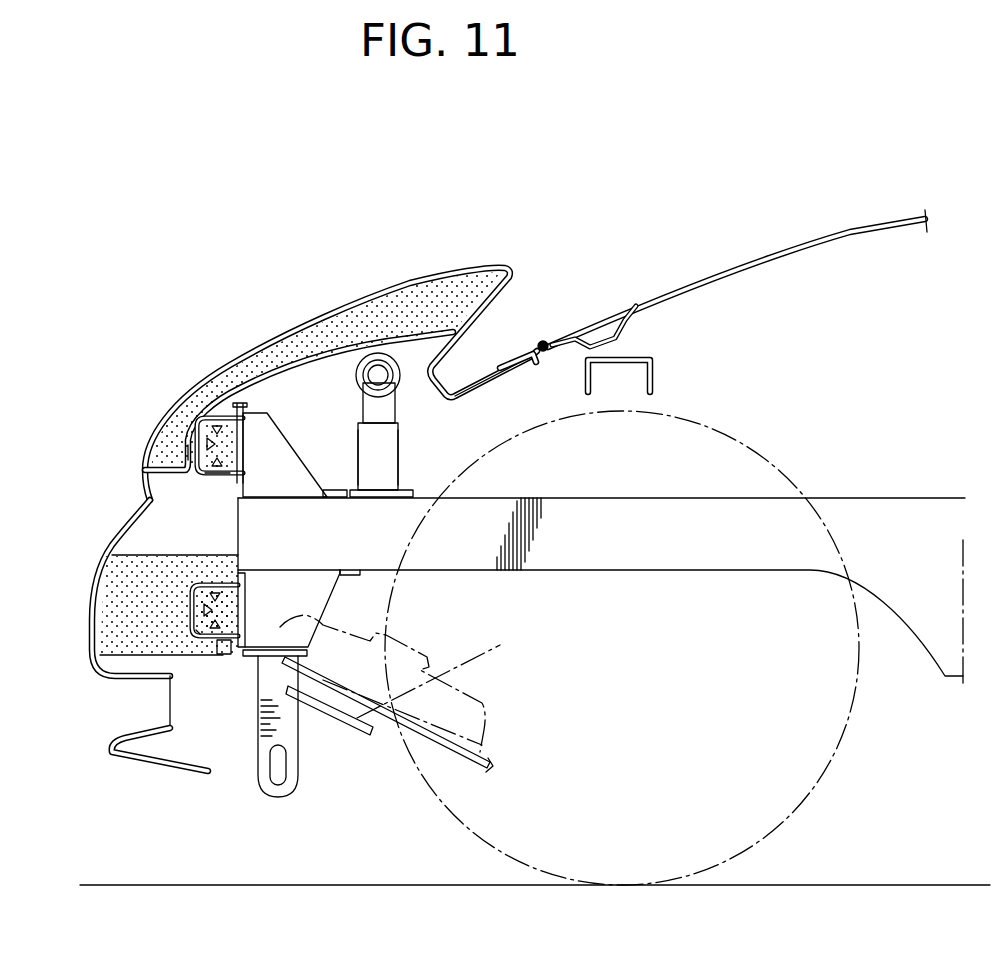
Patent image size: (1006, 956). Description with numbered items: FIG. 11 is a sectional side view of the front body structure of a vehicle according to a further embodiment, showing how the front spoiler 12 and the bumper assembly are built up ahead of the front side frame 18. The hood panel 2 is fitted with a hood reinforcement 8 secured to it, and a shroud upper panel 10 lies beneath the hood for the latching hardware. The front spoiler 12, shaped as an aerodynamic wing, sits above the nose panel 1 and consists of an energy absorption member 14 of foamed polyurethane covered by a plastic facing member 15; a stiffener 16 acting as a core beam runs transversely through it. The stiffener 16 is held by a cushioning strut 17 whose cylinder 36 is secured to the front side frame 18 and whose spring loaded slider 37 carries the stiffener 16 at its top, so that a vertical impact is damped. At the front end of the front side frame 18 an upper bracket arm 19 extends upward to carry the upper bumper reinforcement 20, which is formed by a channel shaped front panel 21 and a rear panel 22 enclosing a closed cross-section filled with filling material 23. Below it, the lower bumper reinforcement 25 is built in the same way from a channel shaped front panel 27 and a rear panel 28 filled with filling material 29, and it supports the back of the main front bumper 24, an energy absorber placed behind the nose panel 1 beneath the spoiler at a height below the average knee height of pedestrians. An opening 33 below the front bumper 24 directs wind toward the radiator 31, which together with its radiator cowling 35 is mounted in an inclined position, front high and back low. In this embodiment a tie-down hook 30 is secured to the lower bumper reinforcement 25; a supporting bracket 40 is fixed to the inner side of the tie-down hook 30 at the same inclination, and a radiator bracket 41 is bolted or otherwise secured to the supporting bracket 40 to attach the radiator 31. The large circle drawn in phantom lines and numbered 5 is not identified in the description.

The nose panel 1 is at (110, 540).
The hood panel 2 is at (786, 256).
The wheel 5 is at (853, 720).
The hood reinforcement 8 is at (634, 316).
The shroud upper panel 10 is at (652, 372).
The front spoiler 12 is at (313, 313).
The energy absorption member 14 is at (409, 300).
The plastic facing member 15 is at (441, 270).
The stiffener 16 is at (401, 386).
The cushioning strut 17 is at (358, 443).
The front side frame 18 is at (639, 557).
The upper bracket arm 19 is at (298, 430).
The upper bumper reinforcement 20 is at (208, 473).
The channel shaped front panel 21 is at (197, 453).
The rear panel 22 is at (244, 450).
The filling material 23 is at (224, 414).
The main front bumper 24 is at (107, 618).
The lower bumper reinforcement 25 is at (219, 657).
The channel shaped front panel 27 is at (190, 596).
The rear panel 28 is at (241, 588).
The filling material 29 is at (212, 638).
The tie-down hook 30 is at (262, 785).
The radiator 31 is at (490, 766).
The opening 33 is at (166, 710).
The radiator cowling 35 is at (484, 708).
The cylinder 36 is at (396, 462).
The spring loaded slider 37 is at (369, 405).
The supporting bracket 40 is at (327, 716).
The radiator bracket 41 is at (492, 649).